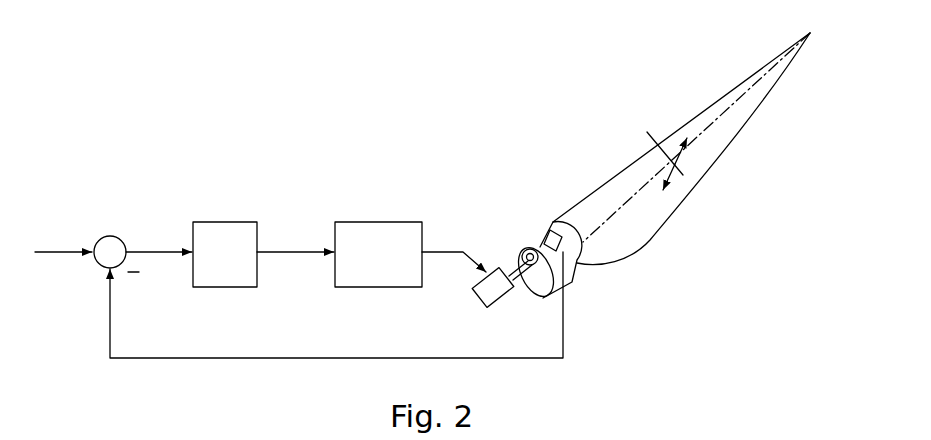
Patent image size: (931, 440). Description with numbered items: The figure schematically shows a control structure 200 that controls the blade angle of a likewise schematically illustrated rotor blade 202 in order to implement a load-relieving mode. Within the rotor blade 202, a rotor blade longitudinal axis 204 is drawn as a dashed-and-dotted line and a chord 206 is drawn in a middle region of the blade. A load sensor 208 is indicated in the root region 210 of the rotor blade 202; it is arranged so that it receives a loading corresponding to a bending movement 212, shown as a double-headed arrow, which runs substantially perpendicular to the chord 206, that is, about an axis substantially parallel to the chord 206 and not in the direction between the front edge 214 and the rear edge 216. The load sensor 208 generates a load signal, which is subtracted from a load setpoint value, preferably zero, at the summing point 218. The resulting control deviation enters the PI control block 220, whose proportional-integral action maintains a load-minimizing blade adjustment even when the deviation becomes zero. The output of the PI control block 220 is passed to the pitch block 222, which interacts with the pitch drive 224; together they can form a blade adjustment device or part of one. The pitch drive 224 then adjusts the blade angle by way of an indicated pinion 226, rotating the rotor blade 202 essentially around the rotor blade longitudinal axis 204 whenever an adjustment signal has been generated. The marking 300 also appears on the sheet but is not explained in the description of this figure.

The pitch control system 200 is at (438, 102).
The rotor blade 202 is at (692, 137).
The pitch axis 204 is at (705, 143).
The blade section 206 is at (688, 180).
The hub 208 is at (547, 240).
The rotation direction 210 is at (580, 288).
The pitch angle 212 is at (658, 186).
The leading edge 214 is at (740, 87).
The trailing edge 216 is at (763, 113).
The comparator 218 is at (112, 245).
The PI controller 220 is at (237, 233).
The pitch actuator block 222 is at (368, 235).
The feedback loop 224 is at (493, 303).
The pitch actuator 226 is at (533, 262).
The reference marker 300 is at (712, 428).